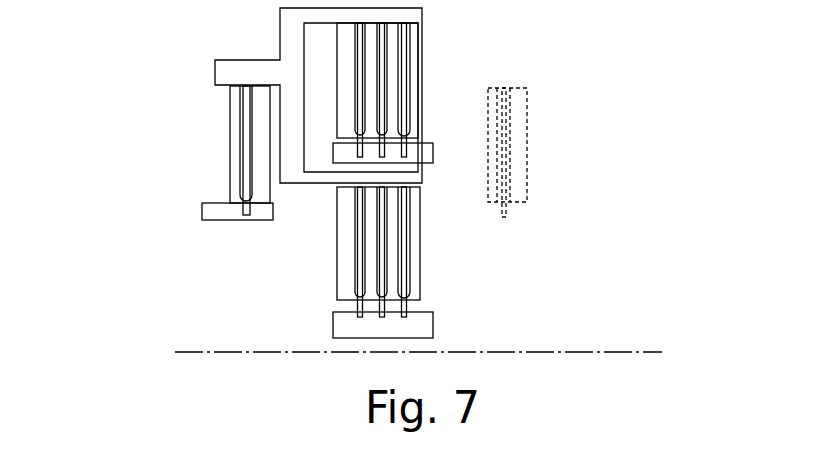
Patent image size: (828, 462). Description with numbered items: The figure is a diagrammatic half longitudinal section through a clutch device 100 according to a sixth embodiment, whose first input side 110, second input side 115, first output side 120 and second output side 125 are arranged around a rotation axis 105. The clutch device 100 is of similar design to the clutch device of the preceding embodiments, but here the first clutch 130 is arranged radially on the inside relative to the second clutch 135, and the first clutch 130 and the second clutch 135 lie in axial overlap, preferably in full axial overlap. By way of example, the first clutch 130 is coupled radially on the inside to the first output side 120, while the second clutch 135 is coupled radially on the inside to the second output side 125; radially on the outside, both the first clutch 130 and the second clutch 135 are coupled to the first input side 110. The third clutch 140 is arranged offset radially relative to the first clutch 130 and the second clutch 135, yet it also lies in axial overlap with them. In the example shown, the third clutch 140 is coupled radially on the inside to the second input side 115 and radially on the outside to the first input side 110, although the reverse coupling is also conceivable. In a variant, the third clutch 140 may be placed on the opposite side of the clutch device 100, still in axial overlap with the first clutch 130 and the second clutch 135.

The clutch device 100 is at (148, 175).
The rotation axis 105 is at (648, 352).
The first input side 110 is at (421, 12).
The second input side 115 is at (210, 210).
The first output side 120 is at (425, 325).
The second output side 125 is at (430, 150).
The first clutch 130 is at (425, 187).
The second clutch 135 is at (424, 23).
The third clutch 140 is at (273, 222).